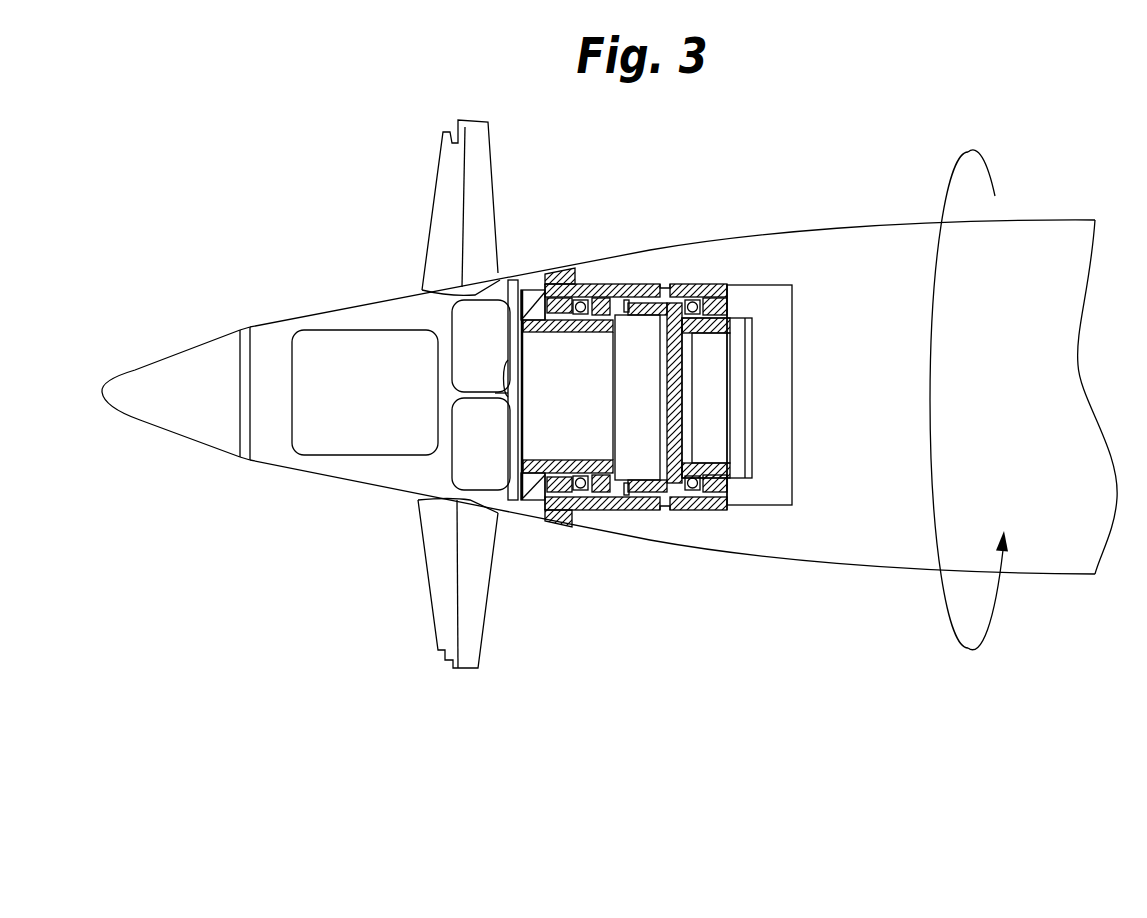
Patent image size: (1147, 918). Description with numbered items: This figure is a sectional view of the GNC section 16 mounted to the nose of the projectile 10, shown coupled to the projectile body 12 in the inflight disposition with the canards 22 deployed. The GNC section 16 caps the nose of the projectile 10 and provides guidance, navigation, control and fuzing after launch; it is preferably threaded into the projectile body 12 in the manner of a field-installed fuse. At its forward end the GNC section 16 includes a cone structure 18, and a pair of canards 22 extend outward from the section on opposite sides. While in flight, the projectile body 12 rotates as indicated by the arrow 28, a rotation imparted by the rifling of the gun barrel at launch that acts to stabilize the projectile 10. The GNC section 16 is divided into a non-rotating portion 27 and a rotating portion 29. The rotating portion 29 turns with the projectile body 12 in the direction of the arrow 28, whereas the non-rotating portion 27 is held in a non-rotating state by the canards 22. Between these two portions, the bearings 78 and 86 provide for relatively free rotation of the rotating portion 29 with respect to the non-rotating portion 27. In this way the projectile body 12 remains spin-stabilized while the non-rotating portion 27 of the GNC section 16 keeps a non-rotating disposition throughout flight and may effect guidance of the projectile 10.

The projectile 10 is at (300, 224).
The projectile body 12 is at (1102, 730).
The GNC section 16 is at (80, 658).
The cone structure 18 is at (183, 345).
The canard 22 is at (432, 187).
The non-rotating portion 27 is at (338, 465).
The arrow 28 is at (995, 185).
The rotating portion 29 is at (652, 502).
The bearing 78 is at (585, 268).
The bearing 86 is at (703, 277).